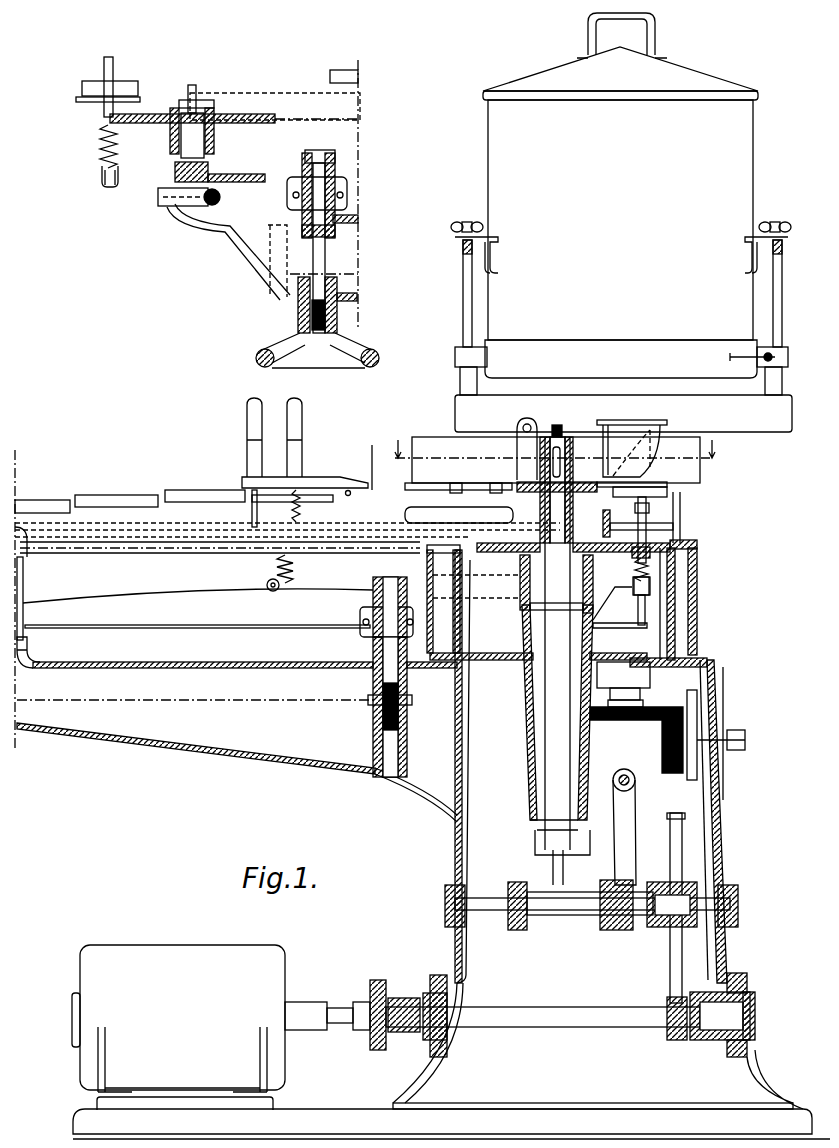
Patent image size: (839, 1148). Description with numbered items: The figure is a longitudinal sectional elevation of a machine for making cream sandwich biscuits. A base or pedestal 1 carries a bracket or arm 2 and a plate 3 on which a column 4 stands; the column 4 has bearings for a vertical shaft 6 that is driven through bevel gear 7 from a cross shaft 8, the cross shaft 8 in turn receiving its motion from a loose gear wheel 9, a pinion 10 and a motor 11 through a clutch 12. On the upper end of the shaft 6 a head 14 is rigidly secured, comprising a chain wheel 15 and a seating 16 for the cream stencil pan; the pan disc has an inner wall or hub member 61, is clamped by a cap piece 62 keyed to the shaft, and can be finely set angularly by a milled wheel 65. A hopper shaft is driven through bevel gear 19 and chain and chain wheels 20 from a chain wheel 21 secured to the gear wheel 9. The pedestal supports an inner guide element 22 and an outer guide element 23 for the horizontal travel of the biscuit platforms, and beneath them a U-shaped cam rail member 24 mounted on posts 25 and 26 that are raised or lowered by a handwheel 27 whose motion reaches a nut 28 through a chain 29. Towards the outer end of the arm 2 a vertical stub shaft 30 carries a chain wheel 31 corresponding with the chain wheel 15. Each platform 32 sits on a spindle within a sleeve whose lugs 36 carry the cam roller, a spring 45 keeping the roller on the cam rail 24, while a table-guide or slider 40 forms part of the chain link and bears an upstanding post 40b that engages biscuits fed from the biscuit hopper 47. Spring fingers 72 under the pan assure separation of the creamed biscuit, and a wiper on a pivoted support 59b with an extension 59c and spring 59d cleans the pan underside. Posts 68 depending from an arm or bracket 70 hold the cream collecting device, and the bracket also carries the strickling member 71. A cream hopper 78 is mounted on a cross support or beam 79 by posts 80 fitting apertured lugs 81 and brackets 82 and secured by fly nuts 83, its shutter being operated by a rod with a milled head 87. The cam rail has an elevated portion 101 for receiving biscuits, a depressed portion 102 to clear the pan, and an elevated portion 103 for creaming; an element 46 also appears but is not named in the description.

The base or pedestal 1 is at (725, 822).
The bracket or arm 2 is at (218, 752).
The plate 3 is at (657, 668).
The column 4 is at (528, 740).
The vertical shaft 6 is at (565, 779).
The bevel gear 7 is at (520, 885).
The cross shaft 8 is at (570, 906).
The loose gear wheel 9 is at (670, 970).
The pinion 10 is at (675, 1040).
The motor 11 is at (127, 957).
The clutch 12 is at (630, 926).
The head 14 is at (582, 503).
The chain wheel 15 is at (640, 553).
The seating 16 is at (667, 492).
The bevel gear 19 is at (615, 720).
The chain and chain wheels 20 is at (700, 740).
The chain wheel 21 is at (695, 886).
The inner U-shaped guide element 22 is at (608, 512).
The outer U-shaped guide element 23 is at (668, 535).
The U-shaped cam rail member 24 is at (100, 602).
The post 25 is at (315, 262).
The post 26 is at (388, 663).
The handwheel 27 is at (262, 357).
The nut 28 is at (377, 740).
The chain 29 is at (153, 702).
The vertical stub shaft 30 is at (197, 155).
The chain wheel 31 is at (152, 115).
The platform 32 is at (130, 92).
The lugs 36 is at (105, 187).
The table-guide or slider 40 is at (97, 100).
The post or biscuit-engaging and positioning member 40b is at (252, 507).
The spring 45 is at (100, 146).
The bar 46 is at (68, 548).
The biscuit hopper 47 is at (250, 420).
The pivoted support 59b is at (368, 444).
The extension 59c is at (340, 490).
The spring 59d is at (298, 490).
The inner wall or hub member 61 is at (517, 445).
The cap piece 62 is at (558, 428).
The milled wheel 65 is at (527, 418).
The posts 68 is at (598, 425).
The arm or bracket 70 is at (612, 470).
The strickling member 71 is at (640, 478).
The spring fingers or tongues 72 is at (495, 483).
The hopper 78 is at (752, 125).
The cross support or beam 79 is at (745, 372).
The posts 80 is at (778, 258).
The apertured lugs 81 is at (460, 355).
The brackets 82 is at (492, 238).
The fly nuts 83 is at (455, 227).
The milled head 87 is at (766, 353).
The elevated portion 101 is at (300, 602).
The depressed portion 102 is at (485, 612).
The elevated portion 103 is at (632, 615).